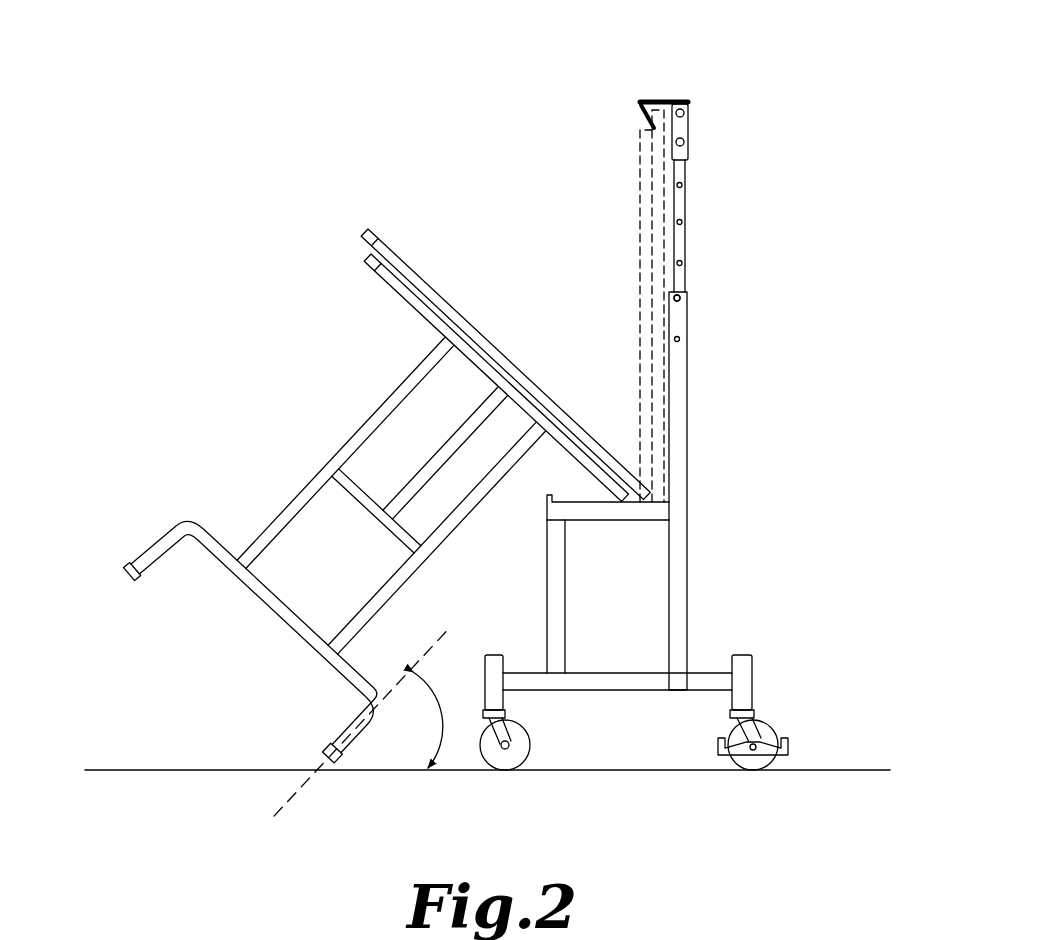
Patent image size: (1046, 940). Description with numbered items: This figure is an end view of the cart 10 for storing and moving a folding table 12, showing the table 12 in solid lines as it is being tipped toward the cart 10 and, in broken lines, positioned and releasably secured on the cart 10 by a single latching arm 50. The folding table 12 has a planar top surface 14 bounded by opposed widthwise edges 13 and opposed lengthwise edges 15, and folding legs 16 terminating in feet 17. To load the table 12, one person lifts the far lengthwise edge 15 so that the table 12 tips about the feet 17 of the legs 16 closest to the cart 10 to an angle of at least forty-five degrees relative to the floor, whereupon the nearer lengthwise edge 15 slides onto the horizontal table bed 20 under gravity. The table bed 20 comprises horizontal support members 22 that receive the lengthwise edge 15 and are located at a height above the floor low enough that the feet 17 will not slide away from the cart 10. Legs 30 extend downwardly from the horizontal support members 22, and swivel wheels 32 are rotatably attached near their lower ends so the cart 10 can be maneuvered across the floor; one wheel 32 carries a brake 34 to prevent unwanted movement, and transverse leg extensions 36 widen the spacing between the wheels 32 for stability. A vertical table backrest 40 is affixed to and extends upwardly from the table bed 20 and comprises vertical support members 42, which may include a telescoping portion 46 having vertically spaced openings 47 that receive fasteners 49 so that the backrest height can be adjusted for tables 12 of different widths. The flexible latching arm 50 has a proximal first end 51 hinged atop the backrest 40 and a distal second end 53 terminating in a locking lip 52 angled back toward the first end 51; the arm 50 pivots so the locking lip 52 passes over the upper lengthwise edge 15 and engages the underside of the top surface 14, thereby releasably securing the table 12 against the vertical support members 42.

The cart 10 is at (483, 166).
The folding table 12 is at (265, 472).
The widthwise edges 13 is at (410, 269).
The top surface 14 is at (467, 316).
The lengthwise edges 15 is at (367, 230).
The folding legs 16 is at (345, 436).
The feet 17 is at (338, 760).
The table bed 20 is at (722, 525).
The horizontal support members 22 is at (598, 522).
The legs 30 is at (687, 612).
The wheels 32 is at (518, 767).
The brake 34 is at (790, 742).
The transverse leg extensions 36 is at (617, 692).
The table backrest 40 is at (752, 133).
The vertical support members 42 is at (687, 385).
The telescoping portion 46 is at (684, 242).
The vertically spaced openings 47 is at (684, 222).
The fasteners 49 is at (687, 299).
The latching arm 50 is at (667, 100).
The first end 51 is at (690, 103).
The locking lip 52 is at (640, 102).
The second end 53 is at (640, 100).